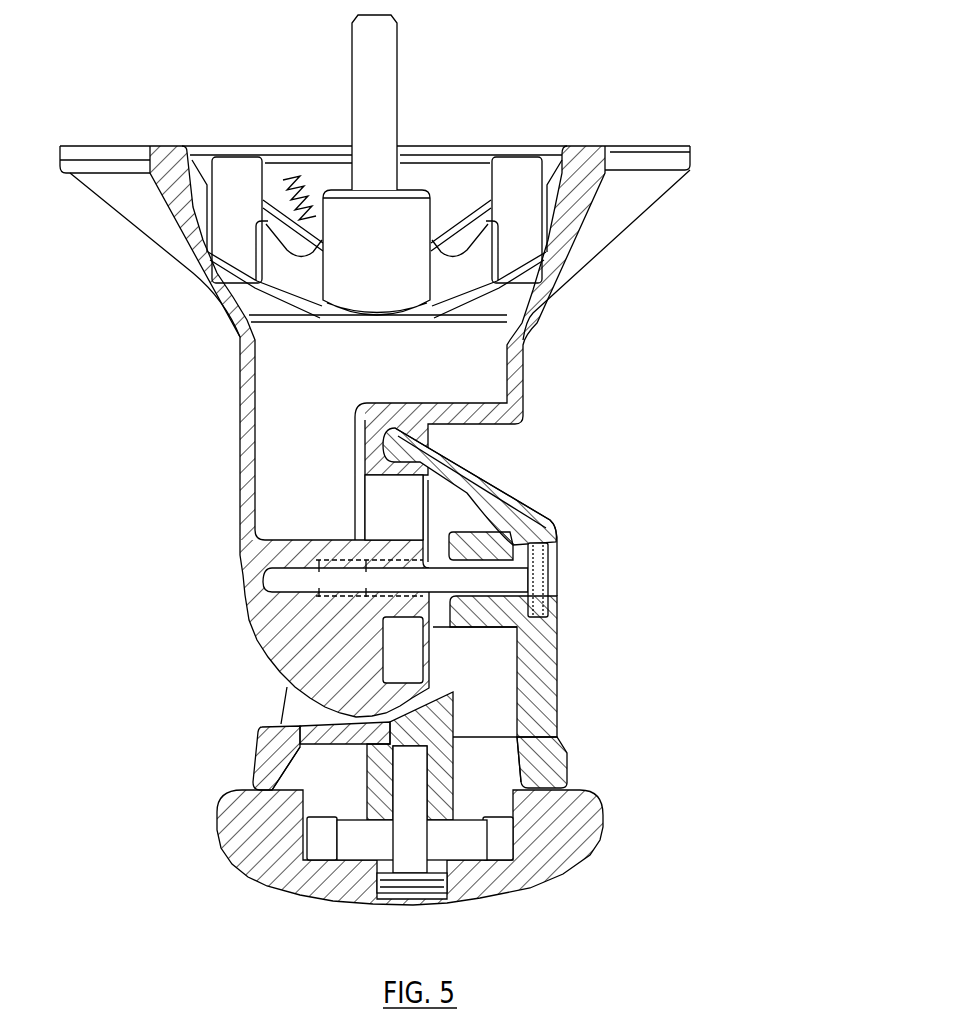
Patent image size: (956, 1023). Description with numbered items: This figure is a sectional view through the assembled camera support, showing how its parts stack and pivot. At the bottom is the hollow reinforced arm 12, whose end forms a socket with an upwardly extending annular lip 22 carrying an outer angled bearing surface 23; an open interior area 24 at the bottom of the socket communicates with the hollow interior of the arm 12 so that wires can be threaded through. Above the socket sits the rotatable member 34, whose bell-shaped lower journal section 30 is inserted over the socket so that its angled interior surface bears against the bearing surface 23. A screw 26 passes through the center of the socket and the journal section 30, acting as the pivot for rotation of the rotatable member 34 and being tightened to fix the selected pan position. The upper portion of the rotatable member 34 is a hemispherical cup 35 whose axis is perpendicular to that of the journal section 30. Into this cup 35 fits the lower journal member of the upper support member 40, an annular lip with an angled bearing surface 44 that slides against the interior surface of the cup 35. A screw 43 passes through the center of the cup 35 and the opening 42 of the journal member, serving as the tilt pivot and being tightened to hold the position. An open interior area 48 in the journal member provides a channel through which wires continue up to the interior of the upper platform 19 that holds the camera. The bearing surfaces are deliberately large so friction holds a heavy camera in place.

The hollow reinforced arm 12 is at (602, 823).
The upper platform 19 is at (620, 193).
The annular lip 22 is at (523, 768).
The outer angled bearing surface 23 is at (540, 757).
The open interior area 24 is at (350, 848).
The screw 26 is at (428, 888).
The bell-shaped lower journal section 30 is at (268, 766).
The rotatable member 34 is at (547, 708).
The hemispherical cup 35 is at (445, 453).
The upper support member 40 is at (522, 348).
The opening 42 is at (335, 578).
The screw 43 is at (550, 592).
The angled bearing surface 44 is at (413, 698).
The open interior area 48 is at (393, 507).